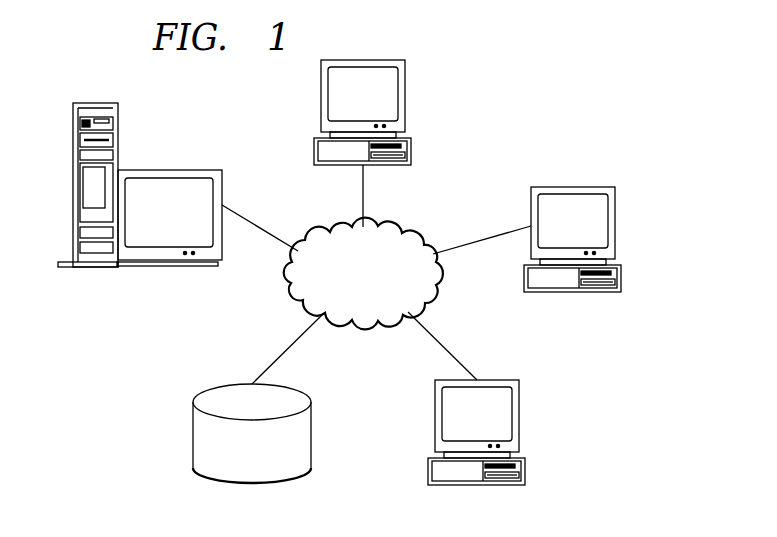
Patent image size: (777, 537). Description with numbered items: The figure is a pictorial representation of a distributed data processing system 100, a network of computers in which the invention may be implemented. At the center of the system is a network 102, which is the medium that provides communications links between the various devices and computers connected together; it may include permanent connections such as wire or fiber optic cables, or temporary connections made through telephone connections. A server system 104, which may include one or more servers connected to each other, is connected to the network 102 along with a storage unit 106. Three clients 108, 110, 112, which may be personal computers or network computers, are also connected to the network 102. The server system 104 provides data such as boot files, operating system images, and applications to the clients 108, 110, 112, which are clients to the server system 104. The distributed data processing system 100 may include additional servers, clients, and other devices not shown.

The distributed data processing system 100 is at (538, 84).
The network 102 is at (393, 227).
The server system 104 is at (168, 170).
The storage unit 106 is at (194, 435).
The client 108 is at (405, 95).
The client 110 is at (614, 226).
The client 112 is at (519, 418).